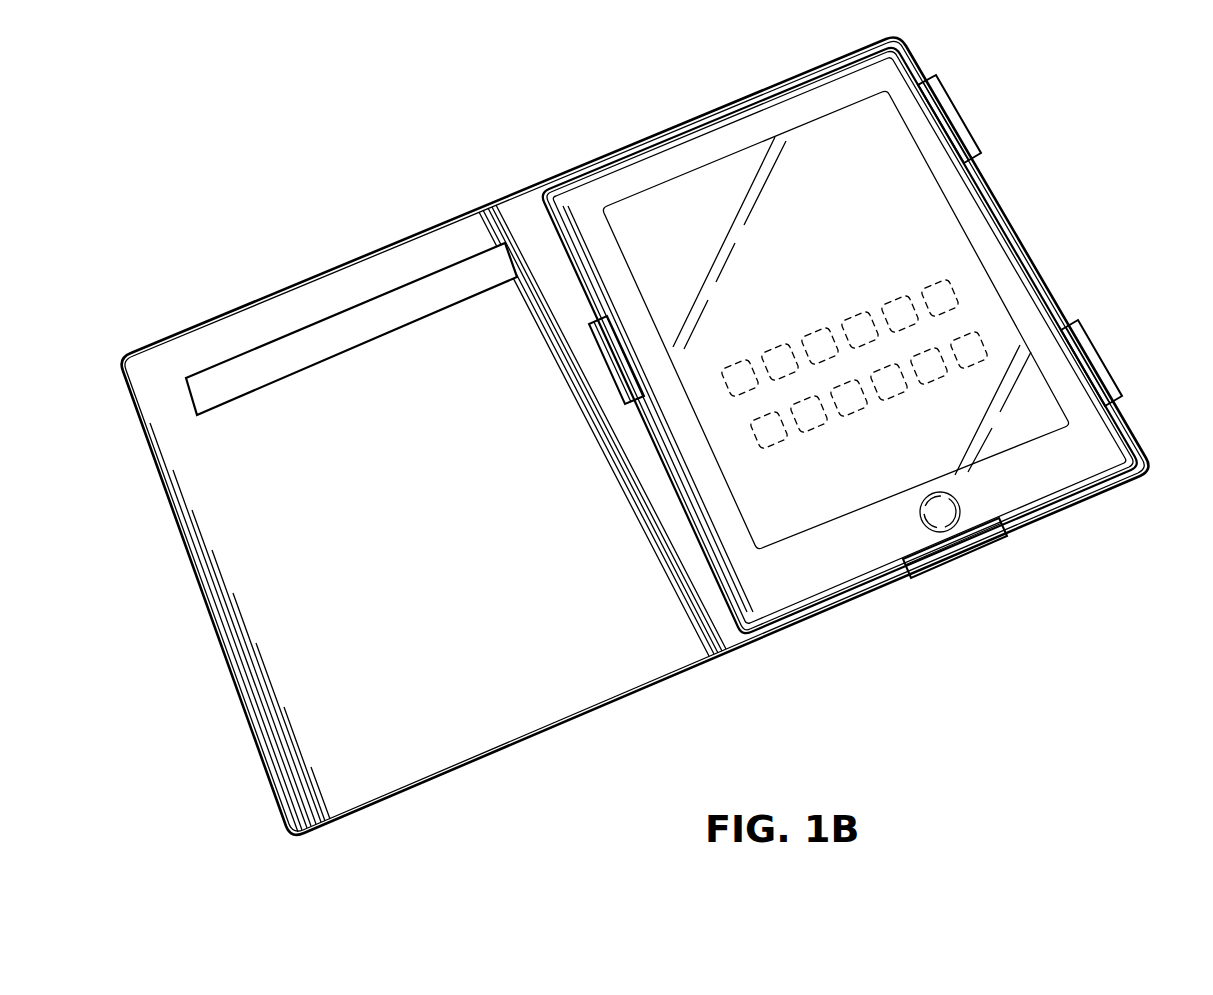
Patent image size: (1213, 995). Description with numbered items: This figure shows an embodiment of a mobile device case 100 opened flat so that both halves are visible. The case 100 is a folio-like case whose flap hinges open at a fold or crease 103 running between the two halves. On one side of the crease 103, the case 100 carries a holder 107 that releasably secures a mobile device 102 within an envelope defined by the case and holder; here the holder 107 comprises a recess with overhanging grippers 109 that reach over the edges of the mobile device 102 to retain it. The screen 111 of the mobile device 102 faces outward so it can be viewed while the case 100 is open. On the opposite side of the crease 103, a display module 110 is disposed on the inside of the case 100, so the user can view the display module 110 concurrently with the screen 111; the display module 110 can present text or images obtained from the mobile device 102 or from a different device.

The mobile device case 100 is at (388, 246).
The mobile device 102 is at (985, 178).
The fold or crease 103 is at (538, 185).
The holder 107 is at (1034, 522).
The overhanging grippers 109 is at (947, 114).
The display module 110 is at (228, 360).
The screen 111 is at (955, 273).